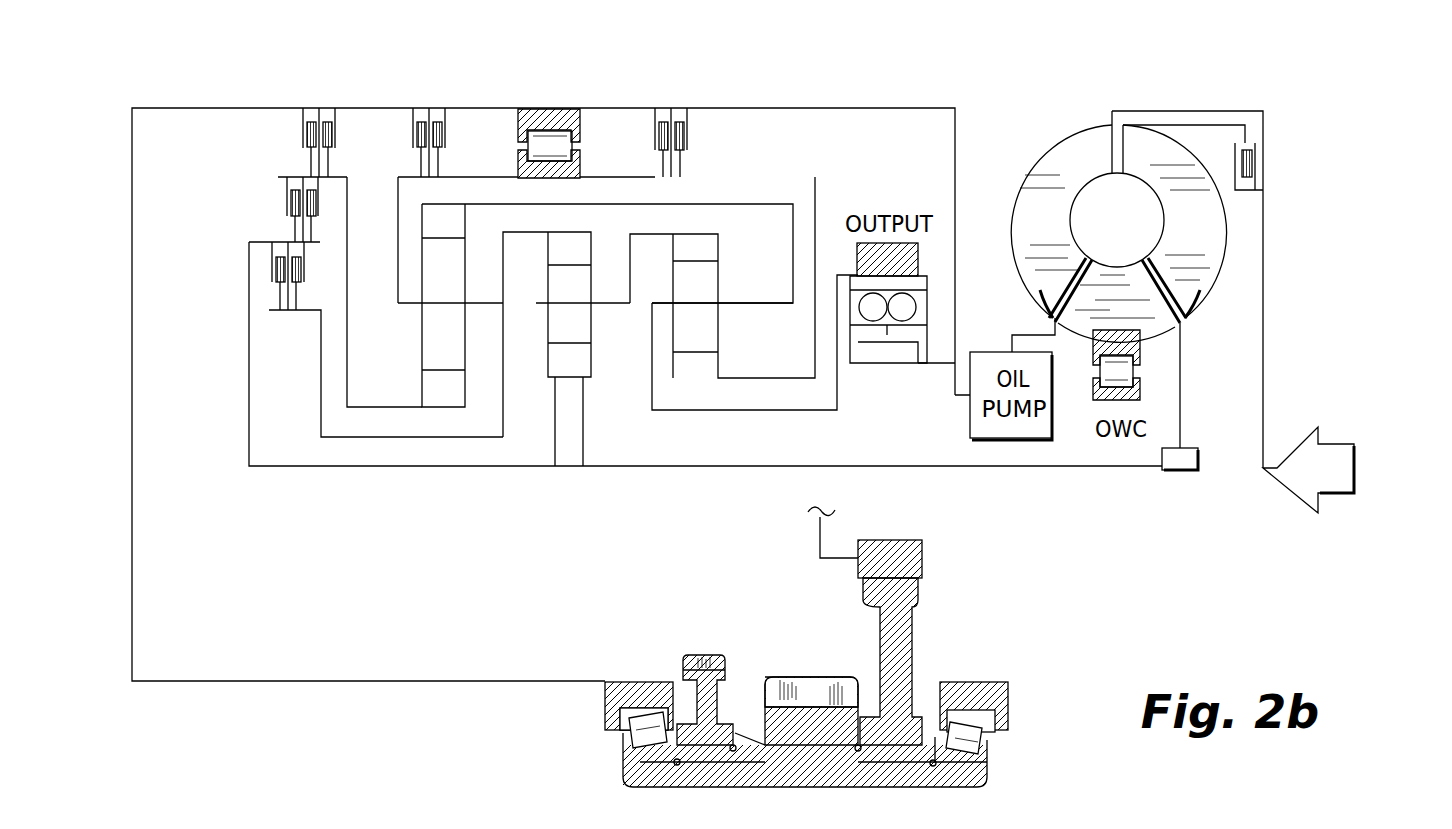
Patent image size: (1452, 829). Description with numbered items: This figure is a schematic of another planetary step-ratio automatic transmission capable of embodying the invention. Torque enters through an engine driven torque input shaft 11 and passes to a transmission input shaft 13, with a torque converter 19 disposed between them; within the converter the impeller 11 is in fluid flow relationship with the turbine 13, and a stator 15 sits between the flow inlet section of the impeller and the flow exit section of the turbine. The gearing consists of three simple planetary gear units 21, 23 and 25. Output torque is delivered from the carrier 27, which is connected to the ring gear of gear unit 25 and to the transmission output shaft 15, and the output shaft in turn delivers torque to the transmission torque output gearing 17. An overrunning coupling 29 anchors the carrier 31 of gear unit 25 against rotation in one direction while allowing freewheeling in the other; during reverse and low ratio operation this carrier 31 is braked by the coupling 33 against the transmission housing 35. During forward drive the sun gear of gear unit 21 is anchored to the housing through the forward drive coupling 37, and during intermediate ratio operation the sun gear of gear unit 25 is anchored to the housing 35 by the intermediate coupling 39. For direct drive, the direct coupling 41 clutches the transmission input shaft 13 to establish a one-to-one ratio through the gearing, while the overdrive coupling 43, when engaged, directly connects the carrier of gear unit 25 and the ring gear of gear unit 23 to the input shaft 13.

The engine driven torque input shaft 11 is at (1265, 466).
The transmission input shaft 13 is at (1008, 468).
The transmission output shaft 15 is at (730, 411).
The transmission torque output gearing 17 is at (758, 690).
The torque converter 19 is at (1030, 160).
The planetary gear unit 21 is at (695, 226).
The planetary gear unit 23 is at (570, 226).
The planetary gear unit 25 is at (440, 196).
The carrier 27 is at (738, 303).
The overrunning coupling 29 is at (522, 112).
The carrier 31 is at (400, 240).
The coupling 33 is at (410, 133).
The transmission housing 35 is at (807, 109).
The forward drive coupling 37 is at (687, 137).
The intermediate coupling 39 is at (305, 135).
The direct coupling 41 is at (292, 203).
The overdrive coupling 43 is at (278, 270).